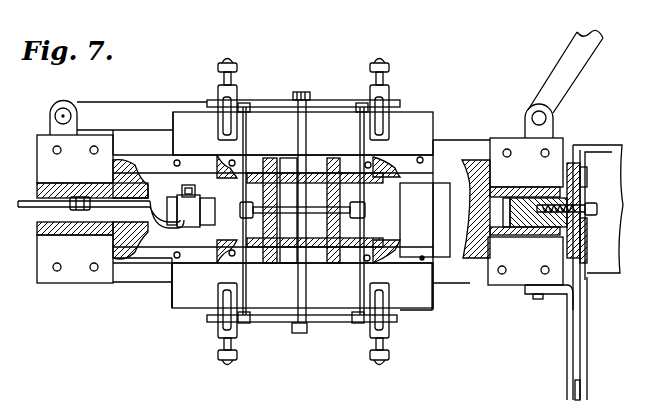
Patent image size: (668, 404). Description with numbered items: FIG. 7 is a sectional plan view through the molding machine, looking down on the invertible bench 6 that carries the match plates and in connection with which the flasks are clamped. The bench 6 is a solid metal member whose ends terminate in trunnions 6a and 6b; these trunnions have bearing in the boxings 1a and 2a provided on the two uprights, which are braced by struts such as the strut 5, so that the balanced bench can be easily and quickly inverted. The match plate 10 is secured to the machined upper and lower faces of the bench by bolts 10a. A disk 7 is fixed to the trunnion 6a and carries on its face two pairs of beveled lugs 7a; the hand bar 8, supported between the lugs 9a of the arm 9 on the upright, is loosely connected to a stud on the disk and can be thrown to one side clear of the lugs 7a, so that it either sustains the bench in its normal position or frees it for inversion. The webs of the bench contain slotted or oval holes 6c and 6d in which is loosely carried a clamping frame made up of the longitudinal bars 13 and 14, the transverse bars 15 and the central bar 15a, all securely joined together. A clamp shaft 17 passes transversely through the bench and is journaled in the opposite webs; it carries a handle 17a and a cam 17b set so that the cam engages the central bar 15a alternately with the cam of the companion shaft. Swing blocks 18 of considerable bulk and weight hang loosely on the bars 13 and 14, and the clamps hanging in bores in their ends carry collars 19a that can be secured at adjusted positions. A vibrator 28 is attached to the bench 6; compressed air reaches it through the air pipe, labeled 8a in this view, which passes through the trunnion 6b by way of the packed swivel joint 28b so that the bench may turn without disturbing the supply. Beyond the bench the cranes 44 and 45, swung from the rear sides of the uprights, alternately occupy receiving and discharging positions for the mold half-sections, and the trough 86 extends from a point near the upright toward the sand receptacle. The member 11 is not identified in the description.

The boxing 1a is at (517, 285).
The boxing 2a is at (35, 258).
The strut 5 is at (458, 143).
The invertible bench 6 is at (455, 268).
The trunnion 6a is at (502, 193).
The trunnion 6b is at (60, 183).
The slotted hole 6c is at (400, 145).
The slotted hole 6d is at (363, 220).
The disk 7 is at (568, 147).
The beveled lugs 7a is at (582, 173).
The hand bar 8 is at (587, 338).
The air pipe 8a is at (18, 213).
The arm 9 is at (567, 350).
The lugs 9a is at (573, 388).
The match plate 10 is at (432, 298).
The bolts 10a is at (422, 164).
The housing body 11 is at (170, 287).
The longitudinal bar 13 is at (327, 107).
The longitudinal bar 14 is at (330, 323).
The transverse bars 15 is at (240, 148).
The central bar 15a is at (313, 207).
The clamp shaft 17 is at (288, 322).
The handle 17a is at (298, 333).
The cam 17b is at (290, 215).
The swing blocks 18 is at (387, 87).
The collars 19a is at (389, 355).
The vibrator 28 is at (191, 206).
The packed swivel joint 28b is at (88, 212).
The crane 44 is at (585, 63).
The crane 45 is at (127, 110).
The trough 86 is at (607, 147).